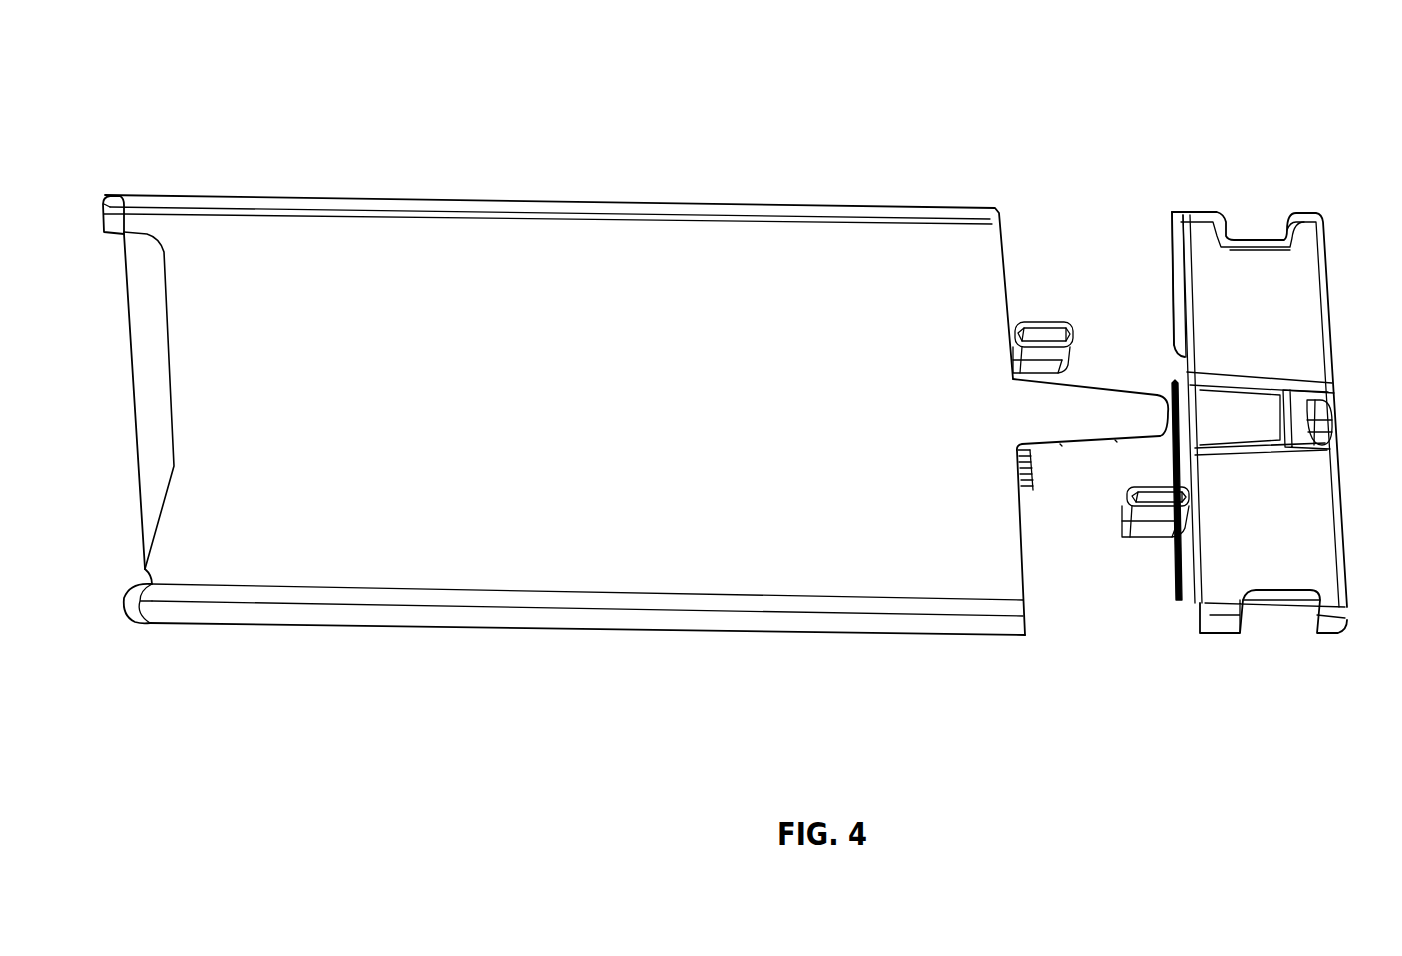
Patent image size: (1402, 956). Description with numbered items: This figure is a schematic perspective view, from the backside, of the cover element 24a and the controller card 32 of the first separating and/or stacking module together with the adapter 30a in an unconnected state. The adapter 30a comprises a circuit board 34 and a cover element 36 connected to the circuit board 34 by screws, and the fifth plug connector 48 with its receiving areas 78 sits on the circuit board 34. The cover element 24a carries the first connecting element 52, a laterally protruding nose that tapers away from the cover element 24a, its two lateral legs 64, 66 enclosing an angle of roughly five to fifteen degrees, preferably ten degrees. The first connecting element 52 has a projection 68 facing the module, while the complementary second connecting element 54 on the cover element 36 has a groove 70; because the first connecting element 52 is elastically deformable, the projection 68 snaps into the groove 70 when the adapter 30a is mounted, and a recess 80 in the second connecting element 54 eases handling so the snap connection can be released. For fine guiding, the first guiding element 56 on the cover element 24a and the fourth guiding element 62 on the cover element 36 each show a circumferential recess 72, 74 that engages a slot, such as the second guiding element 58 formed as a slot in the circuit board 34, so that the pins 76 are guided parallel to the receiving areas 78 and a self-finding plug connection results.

The cover element 24a is at (593, 576).
The controller card 32 is at (144, 432).
The first connecting element 52 is at (1107, 412).
The lateral leg 64 is at (1130, 392).
The first guiding element 56 is at (1037, 322).
The circumferential recess 72 is at (1052, 366).
The pins 76 is at (1030, 488).
The lateral leg 66 is at (1080, 440).
The projection 68 is at (1115, 440).
The fifth plug connector 48 is at (1170, 382).
The receiving areas 78 is at (1174, 463).
The circumferential recess 74 is at (1157, 527).
The fourth guiding element 62 is at (1167, 537).
The adapter 30a is at (1200, 140).
The circuit board 34 is at (1172, 230).
The cover element 36 is at (1240, 267).
The second guiding element 58 is at (1180, 353).
The second connecting element 54 is at (1232, 418).
The groove 70 is at (1285, 402).
The recess 80 is at (1323, 427).